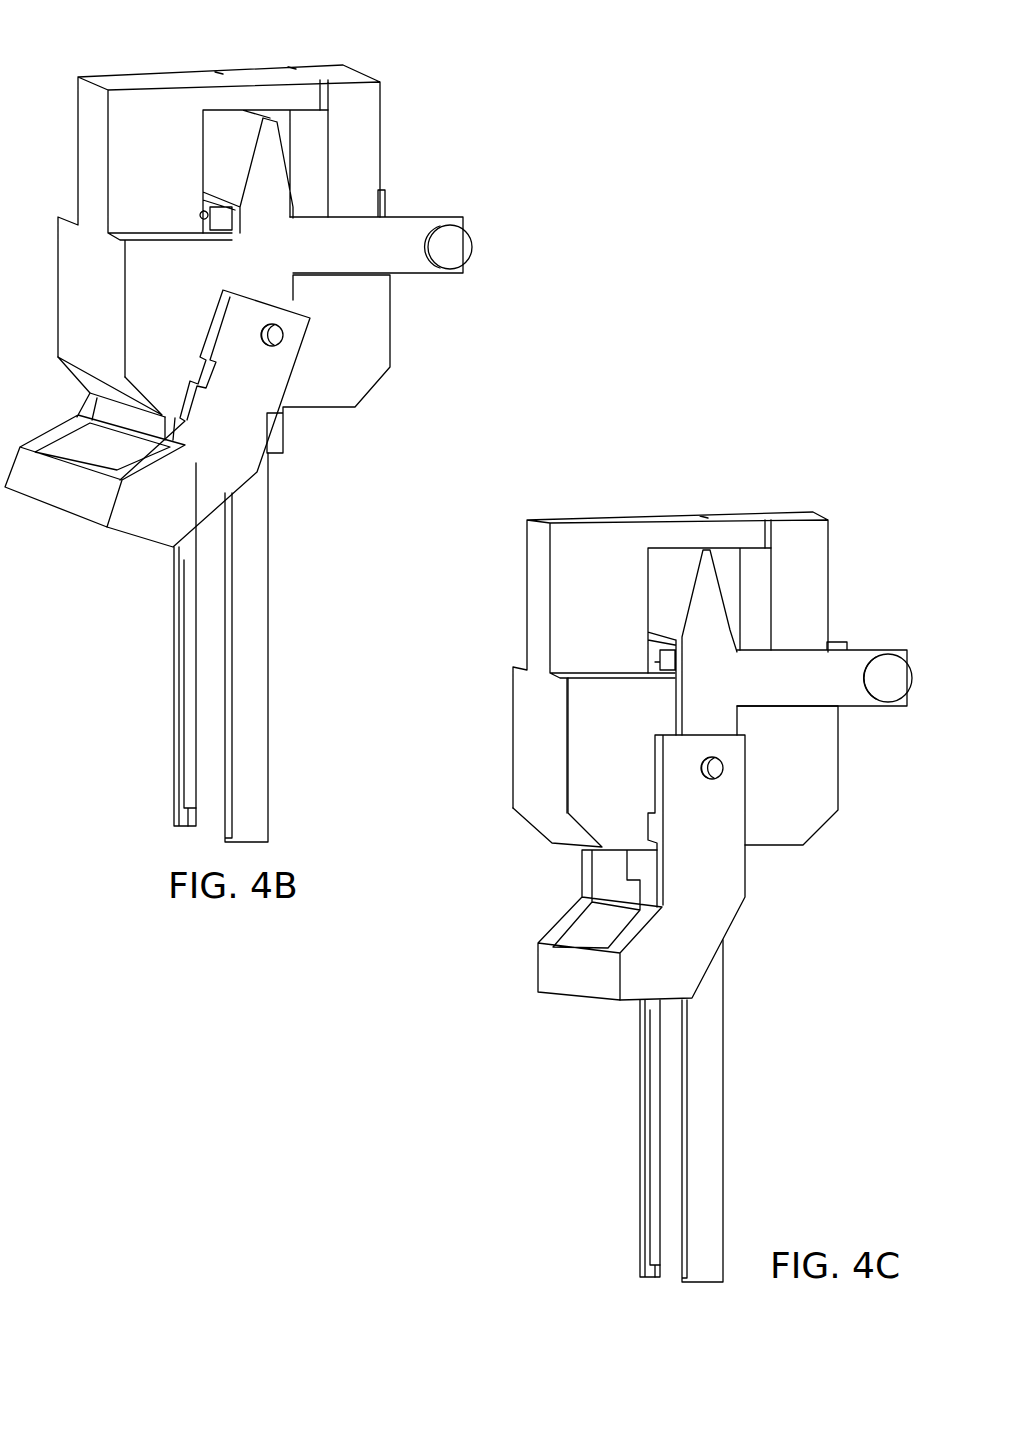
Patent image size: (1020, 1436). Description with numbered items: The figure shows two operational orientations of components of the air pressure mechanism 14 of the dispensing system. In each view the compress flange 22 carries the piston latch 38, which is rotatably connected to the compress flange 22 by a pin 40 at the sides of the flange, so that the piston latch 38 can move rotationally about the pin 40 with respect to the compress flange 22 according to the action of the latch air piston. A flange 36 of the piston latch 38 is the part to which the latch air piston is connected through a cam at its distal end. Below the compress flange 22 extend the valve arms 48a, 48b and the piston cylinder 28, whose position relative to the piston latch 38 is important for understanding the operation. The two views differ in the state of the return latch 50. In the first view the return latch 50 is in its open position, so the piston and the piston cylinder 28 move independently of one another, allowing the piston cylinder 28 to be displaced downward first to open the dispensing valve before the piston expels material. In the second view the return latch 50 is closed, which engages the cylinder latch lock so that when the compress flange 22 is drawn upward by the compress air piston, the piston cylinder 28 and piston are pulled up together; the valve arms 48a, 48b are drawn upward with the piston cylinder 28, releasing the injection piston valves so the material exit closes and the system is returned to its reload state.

In FIG. 4B, the air pressure mechanism 14 is at (132, 38).
In FIG. 4C, the air pressure mechanism 14 is at (640, 492).
In FIG. 4B, the compress flange 22 is at (378, 358).
In FIG. 4C, the compress flange 22 is at (525, 763).
In FIG. 4B, the piston cylinder 28 is at (205, 810).
In FIG. 4C, the piston cylinder 28 is at (665, 1263).
In FIG. 4B, the flange 36 is at (450, 243).
In FIG. 4C, the flange 36 is at (885, 665).
In FIG. 4B, the piston latch 38 is at (222, 130).
In FIG. 4C, the piston latch 38 is at (680, 583).
In FIG. 4B, the pin 40 is at (283, 340).
In FIG. 4C, the pin 40 is at (730, 775).
In FIG. 4B, the valve arm 48a is at (257, 640).
In FIG. 4C, the valve arm 48a is at (702, 1215).
In FIG. 4B, the valve arm 48b is at (185, 703).
In FIG. 4C, the valve arm 48b is at (652, 1232).
In FIG. 4B, the return latch 50 is at (127, 518).
In FIG. 4C, the return latch 50 is at (600, 978).